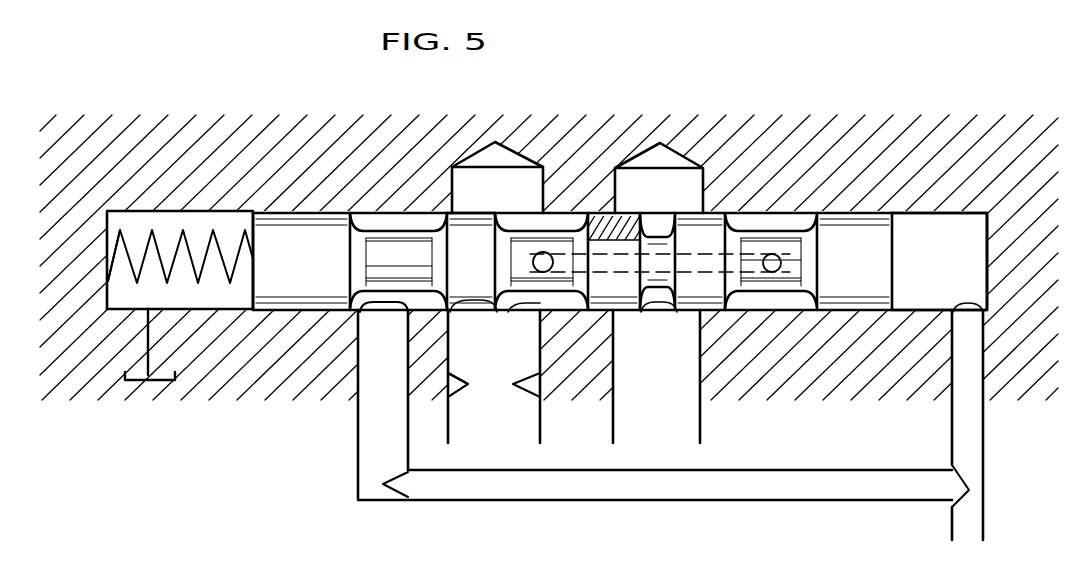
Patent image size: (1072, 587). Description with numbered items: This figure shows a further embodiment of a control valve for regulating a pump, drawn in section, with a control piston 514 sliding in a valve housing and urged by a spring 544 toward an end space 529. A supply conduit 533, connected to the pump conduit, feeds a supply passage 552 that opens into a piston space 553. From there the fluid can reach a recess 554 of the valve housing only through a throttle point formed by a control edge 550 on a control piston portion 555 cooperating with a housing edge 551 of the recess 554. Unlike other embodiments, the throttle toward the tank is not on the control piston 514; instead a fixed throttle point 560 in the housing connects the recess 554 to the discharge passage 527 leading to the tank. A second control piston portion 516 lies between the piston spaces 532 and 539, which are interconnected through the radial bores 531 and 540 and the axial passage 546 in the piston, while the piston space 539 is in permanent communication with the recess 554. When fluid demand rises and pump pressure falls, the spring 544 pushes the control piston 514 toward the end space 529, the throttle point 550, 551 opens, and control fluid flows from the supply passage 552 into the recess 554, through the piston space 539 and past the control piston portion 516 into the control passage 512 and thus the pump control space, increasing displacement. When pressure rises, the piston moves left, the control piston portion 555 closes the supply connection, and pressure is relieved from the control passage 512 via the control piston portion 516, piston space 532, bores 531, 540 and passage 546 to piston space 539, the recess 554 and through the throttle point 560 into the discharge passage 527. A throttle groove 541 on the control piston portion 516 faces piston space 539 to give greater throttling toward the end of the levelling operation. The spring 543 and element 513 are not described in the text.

The return spring 513 is at (157, 203).
The control piston 514 is at (267, 233).
The piston space 553 is at (368, 220).
The control edge 550 is at (447, 258).
The housing edge 551 is at (452, 227).
The control piston portion 555 is at (470, 228).
The piston space 539 is at (580, 220).
The radial bore 540 is at (546, 251).
The throttle groove 541 is at (678, 157).
The second control piston portion 516 is at (707, 230).
The piston space 532 is at (785, 224).
The end space 529 is at (940, 230).
The spring 544 is at (130, 278).
The spring 543 is at (217, 295).
The fixed throttle point 560 is at (450, 383).
The recess 554 is at (508, 355).
The discharge passage 527 is at (508, 433).
The control passage 512 is at (670, 387).
The supply passage 552 is at (373, 455).
The supply conduit 533 is at (952, 497).
The axial passage 546 is at (745, 265).
The radial bore 531 is at (772, 273).